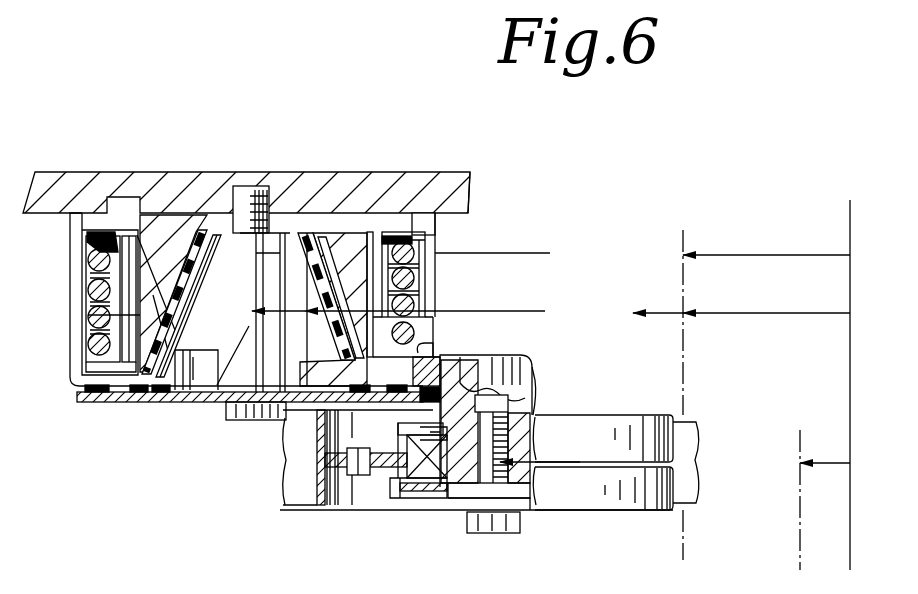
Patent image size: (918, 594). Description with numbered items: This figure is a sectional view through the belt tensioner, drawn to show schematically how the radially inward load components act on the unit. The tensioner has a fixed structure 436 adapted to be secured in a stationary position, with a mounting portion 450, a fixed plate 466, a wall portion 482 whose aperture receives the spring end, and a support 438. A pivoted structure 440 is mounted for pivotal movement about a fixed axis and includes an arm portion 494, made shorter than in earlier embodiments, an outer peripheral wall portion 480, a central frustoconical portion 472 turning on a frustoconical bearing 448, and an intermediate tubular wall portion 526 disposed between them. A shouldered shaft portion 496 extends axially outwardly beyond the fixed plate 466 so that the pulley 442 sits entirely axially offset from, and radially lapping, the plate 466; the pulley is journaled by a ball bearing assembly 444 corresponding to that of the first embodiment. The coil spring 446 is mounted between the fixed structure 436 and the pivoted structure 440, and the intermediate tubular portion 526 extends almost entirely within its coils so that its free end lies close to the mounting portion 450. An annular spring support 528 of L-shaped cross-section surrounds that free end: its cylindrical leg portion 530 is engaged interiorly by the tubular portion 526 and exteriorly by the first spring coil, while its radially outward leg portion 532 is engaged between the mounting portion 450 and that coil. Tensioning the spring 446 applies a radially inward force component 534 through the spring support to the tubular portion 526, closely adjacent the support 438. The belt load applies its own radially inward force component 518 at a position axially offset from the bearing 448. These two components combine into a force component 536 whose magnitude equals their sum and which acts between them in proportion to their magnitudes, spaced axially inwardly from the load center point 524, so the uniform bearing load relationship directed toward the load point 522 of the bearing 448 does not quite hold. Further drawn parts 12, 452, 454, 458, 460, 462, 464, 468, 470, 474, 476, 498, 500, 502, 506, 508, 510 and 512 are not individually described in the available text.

The shaft 12 is at (688, 477).
The fixed structure 436 is at (372, 210).
The support 438 is at (396, 188).
The pivoted structure 440 is at (537, 352).
The pulley 442 is at (660, 413).
The bearing 444 is at (422, 483).
The coil spring 446 is at (425, 280).
The frustoconical bearing 448 is at (176, 246).
The mounting portion 450 is at (472, 186).
The housing wall 452 is at (150, 228).
The nut 454 is at (265, 420).
The arm 458 is at (418, 353).
The inner race 460 is at (82, 314).
The washer 462 is at (247, 420).
The lock washer 464 is at (237, 420).
The fixed plate 466 is at (165, 402).
The bottom plate 468 is at (110, 402).
The seal 470 is at (78, 388).
The central frustoconical portion 472 is at (198, 236).
The seal 474 is at (135, 402).
The cone member 476 is at (360, 200).
The outer peripheral wall portion 480 is at (72, 334).
The wall portion 482 is at (80, 240).
The arm portion 494 is at (530, 390).
The hub 496 is at (530, 430).
The plate 498 is at (308, 455).
The collar 500 is at (352, 475).
The flange 502 is at (598, 505).
The bearing 506 is at (440, 488).
The pin 508 is at (376, 472).
The nut 510 is at (497, 533).
The bolt 512 is at (520, 395).
The radially inward force component 518 is at (840, 463).
The load point 522 is at (248, 326).
The load center point 524 is at (206, 402).
The intermediate tubular wall portion 526 is at (221, 375).
The annular spring support 528 is at (430, 236).
The cylindrical leg portion 530 is at (405, 251).
The leg portion 532 is at (392, 240).
The radially inward force component 534 is at (742, 255).
The combined radially inward force component 536 is at (285, 233).